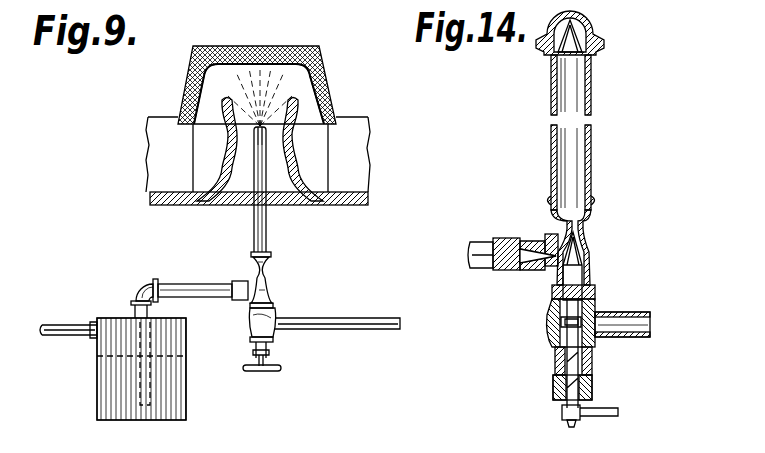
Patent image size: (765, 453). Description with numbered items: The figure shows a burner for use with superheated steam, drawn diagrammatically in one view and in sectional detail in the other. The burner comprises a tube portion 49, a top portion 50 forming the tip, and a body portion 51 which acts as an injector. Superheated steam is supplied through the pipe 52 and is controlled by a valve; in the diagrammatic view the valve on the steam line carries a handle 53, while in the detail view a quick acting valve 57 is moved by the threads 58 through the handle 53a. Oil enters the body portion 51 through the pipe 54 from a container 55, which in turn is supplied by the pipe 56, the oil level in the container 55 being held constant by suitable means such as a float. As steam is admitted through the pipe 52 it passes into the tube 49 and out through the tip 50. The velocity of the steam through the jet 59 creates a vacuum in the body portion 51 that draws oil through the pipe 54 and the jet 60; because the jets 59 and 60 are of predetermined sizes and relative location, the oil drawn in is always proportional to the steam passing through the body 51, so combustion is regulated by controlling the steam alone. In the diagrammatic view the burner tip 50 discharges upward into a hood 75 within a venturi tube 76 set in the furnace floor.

In FIG. 9, the hood 75 is at (272, 54).
In FIG. 9, the venturi tube 76 is at (222, 203).
In FIG. 9, the top portion 50 is at (266, 137).
In FIG. 14, the top portion 50 is at (594, 23).
In FIG. 9, the tube portion 49 is at (267, 233).
In FIG. 14, the tube portion 49 is at (590, 100).
In FIG. 9, the body portion 51 is at (273, 290).
In FIG. 14, the body portion 51 is at (588, 243).
In FIG. 9, the pipe 52 is at (368, 327).
In FIG. 14, the pipe 52 is at (637, 312).
In FIG. 9, the valve handle 53 is at (281, 371).
In FIG. 14, the handle 53a is at (578, 421).
In FIG. 9, the pipe 54 is at (172, 292).
In FIG. 14, the pipe 54 is at (483, 250).
In FIG. 9, the container 55 is at (176, 400).
In FIG. 9, the pipe 56 is at (56, 333).
In FIG. 14, the quick acting valve 57 is at (565, 323).
In FIG. 14, the threads 58 is at (583, 372).
In FIG. 14, the jet 59 is at (583, 265).
In FIG. 14, the jet 60 is at (527, 245).